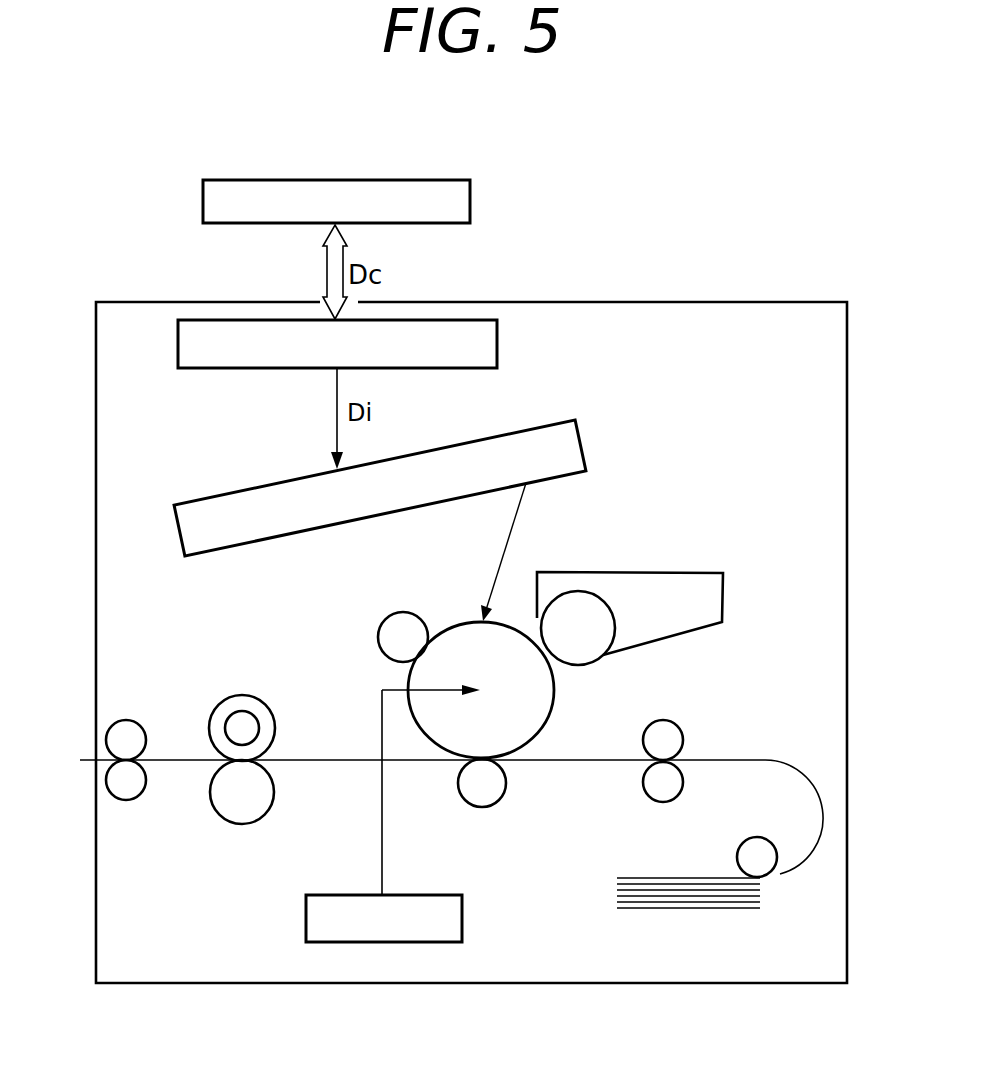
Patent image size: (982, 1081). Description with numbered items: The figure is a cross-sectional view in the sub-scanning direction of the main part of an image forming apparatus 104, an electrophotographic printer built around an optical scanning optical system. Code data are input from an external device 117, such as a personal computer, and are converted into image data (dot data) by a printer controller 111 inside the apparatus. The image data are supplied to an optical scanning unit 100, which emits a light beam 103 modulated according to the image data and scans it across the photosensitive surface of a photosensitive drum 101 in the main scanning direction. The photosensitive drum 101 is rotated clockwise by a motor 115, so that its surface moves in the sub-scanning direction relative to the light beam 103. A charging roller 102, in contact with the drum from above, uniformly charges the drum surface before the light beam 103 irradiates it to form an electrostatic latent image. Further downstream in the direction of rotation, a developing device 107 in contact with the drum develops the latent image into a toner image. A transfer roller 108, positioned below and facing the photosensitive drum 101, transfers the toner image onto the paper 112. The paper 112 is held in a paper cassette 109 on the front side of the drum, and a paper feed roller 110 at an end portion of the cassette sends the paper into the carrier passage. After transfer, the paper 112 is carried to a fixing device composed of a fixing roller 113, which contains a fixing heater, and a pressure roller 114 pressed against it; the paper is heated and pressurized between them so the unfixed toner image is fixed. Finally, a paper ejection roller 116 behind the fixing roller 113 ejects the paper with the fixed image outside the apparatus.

The optical scanning unit 100 is at (230, 496).
The photosensitive drum 101 is at (545, 707).
The charging roller 102 is at (393, 618).
The light beam 103 is at (512, 535).
The image forming apparatus 104 is at (633, 300).
The developing device 107 is at (660, 580).
The transfer roller 108 is at (507, 788).
The paper cassette 109 is at (683, 908).
The paper feed roller 110 is at (760, 838).
The printer controller 111 is at (497, 350).
The paper 112 is at (352, 757).
The fixing roller 113 is at (253, 705).
The pressure roller 114 is at (238, 817).
The motor 115 is at (423, 893).
The paper ejection roller 116 is at (132, 720).
The external device 117 is at (437, 178).